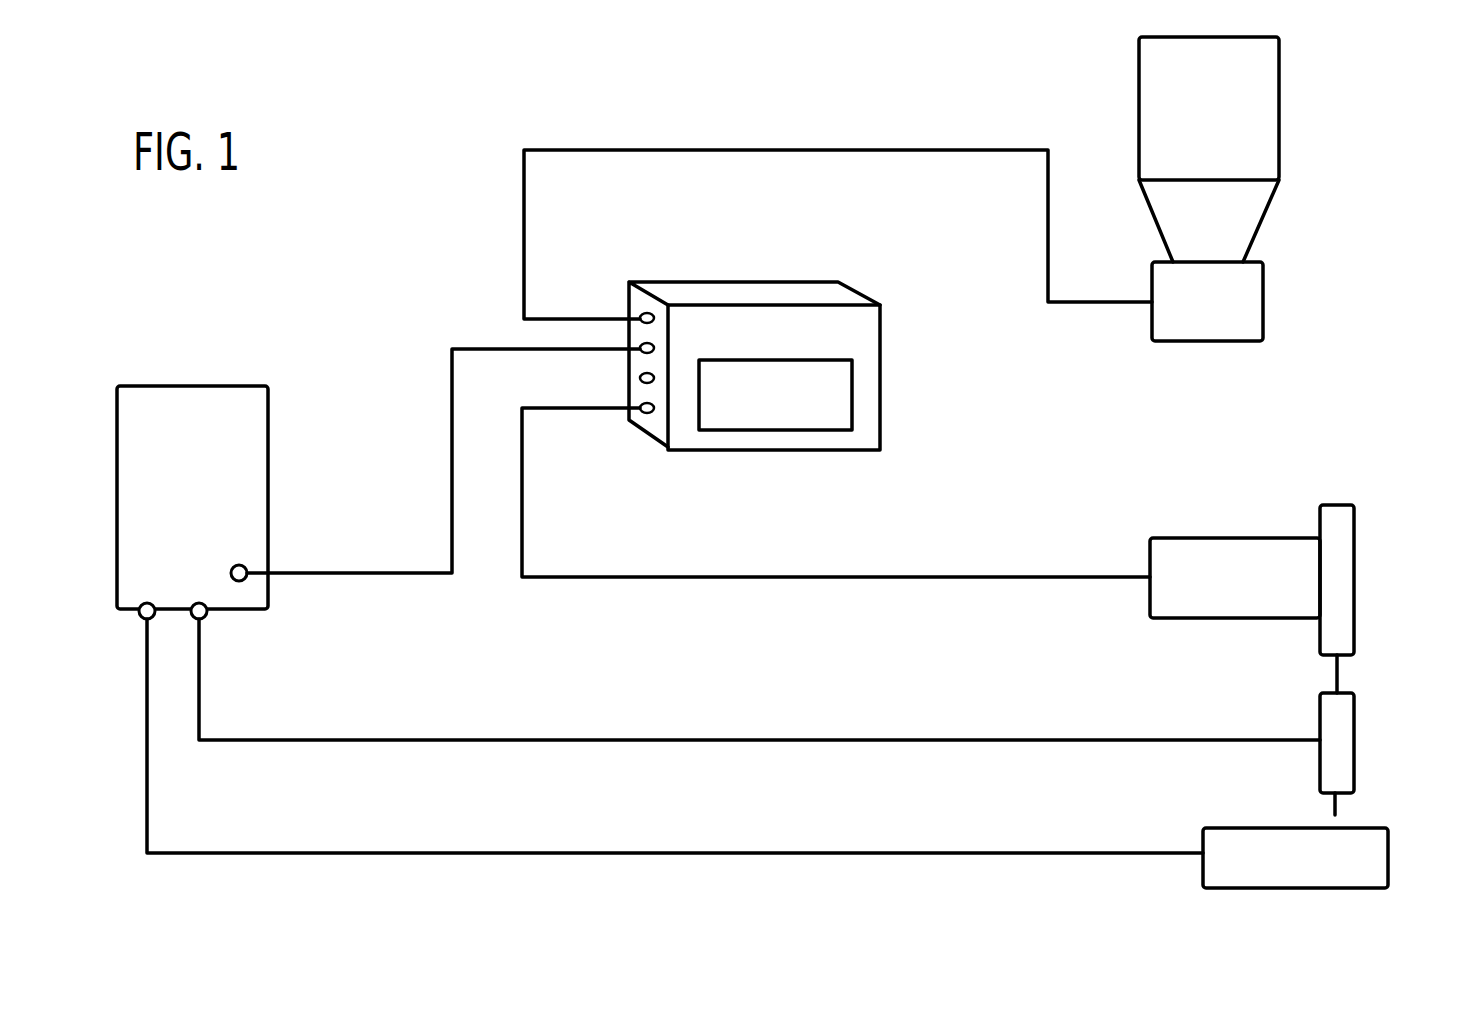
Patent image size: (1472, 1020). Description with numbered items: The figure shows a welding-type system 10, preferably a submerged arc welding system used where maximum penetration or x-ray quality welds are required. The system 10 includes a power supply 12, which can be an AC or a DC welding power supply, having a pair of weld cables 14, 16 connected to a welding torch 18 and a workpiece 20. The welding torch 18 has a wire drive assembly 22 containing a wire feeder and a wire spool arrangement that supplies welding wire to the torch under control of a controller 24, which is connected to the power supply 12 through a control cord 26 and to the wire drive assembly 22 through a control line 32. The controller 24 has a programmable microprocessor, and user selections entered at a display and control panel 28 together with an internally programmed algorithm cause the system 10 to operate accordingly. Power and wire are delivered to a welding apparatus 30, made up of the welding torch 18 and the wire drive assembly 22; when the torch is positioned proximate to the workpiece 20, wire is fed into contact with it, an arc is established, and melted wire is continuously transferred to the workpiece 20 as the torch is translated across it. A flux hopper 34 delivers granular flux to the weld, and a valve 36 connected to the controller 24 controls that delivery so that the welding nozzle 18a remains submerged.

The welding-type system 10 is at (375, 276).
The power supply 12 is at (195, 386).
The weld cable 14 is at (757, 738).
The weld cable 16 is at (673, 851).
The welding torch 18 is at (1356, 742).
The welding nozzle 18a is at (1337, 805).
The workpiece 20 is at (1389, 857).
The wire drive assembly 22 is at (1356, 580).
The controller 24 is at (882, 380).
The control cord 26 is at (452, 450).
The display and control panel 28 is at (775, 432).
The welding apparatus 30 is at (1100, 645).
The control line 32 is at (523, 493).
The flux hopper 34 is at (1281, 108).
The valve 36 is at (1265, 303).